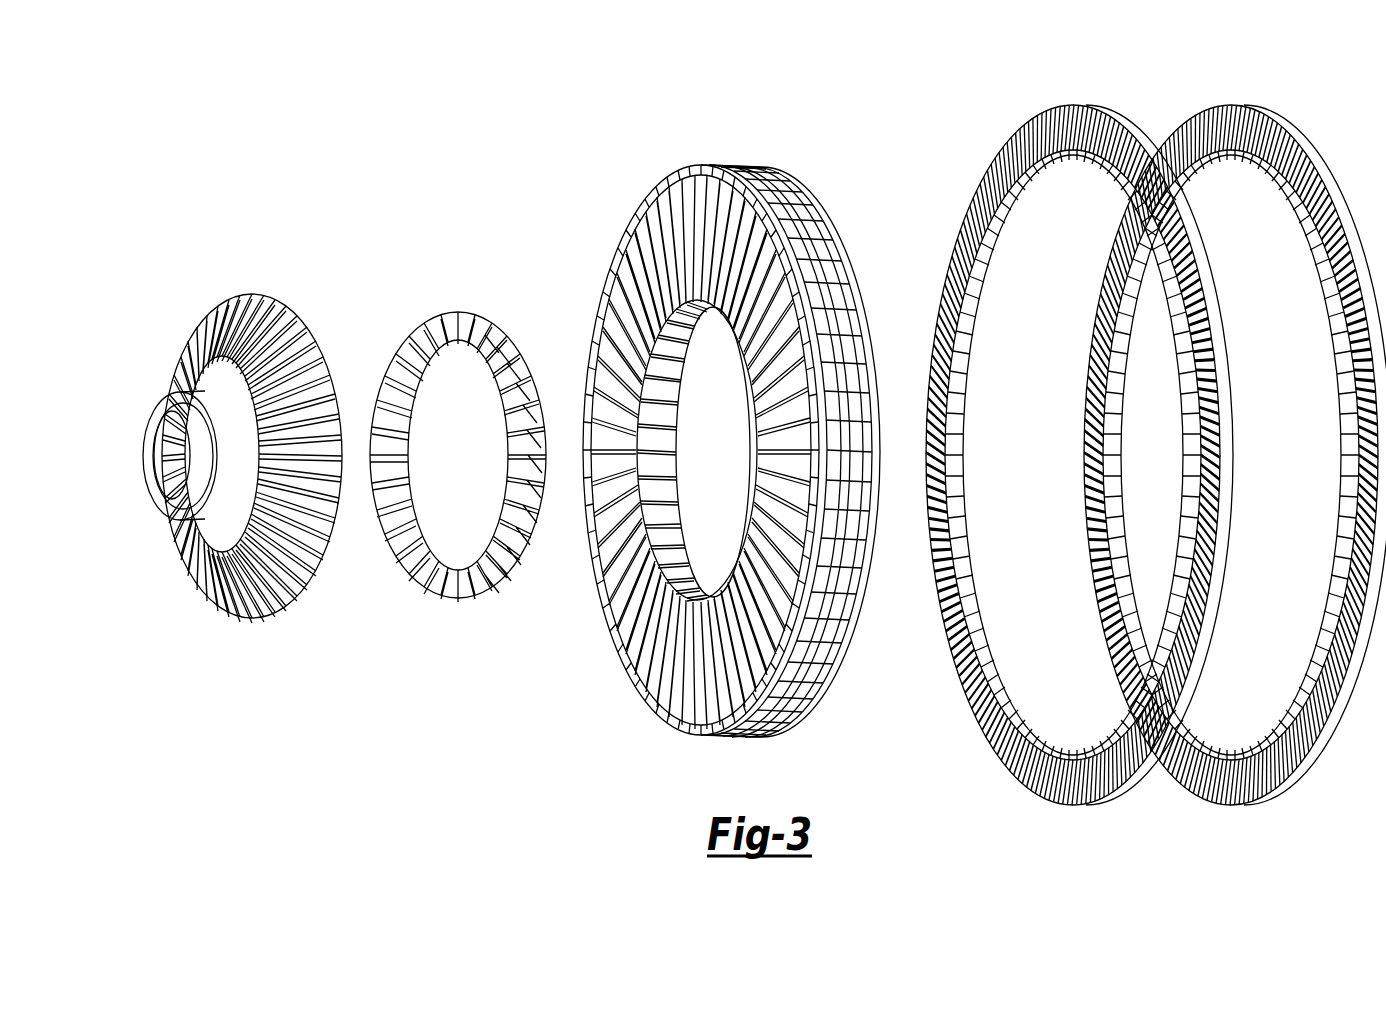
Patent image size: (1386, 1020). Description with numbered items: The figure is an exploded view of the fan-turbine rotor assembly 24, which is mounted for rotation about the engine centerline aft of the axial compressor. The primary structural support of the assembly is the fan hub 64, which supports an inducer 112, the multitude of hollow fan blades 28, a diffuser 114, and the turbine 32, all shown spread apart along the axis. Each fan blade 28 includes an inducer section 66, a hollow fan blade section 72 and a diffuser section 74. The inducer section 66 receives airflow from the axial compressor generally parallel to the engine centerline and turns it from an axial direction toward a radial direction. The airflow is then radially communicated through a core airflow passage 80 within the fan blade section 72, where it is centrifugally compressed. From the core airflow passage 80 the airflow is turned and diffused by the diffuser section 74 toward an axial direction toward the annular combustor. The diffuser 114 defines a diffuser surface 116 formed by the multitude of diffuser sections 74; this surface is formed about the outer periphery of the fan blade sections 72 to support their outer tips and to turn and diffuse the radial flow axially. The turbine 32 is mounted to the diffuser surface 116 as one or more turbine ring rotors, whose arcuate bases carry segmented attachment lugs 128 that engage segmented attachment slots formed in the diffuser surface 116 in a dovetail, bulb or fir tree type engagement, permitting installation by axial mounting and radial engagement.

The fan-turbine rotor assembly 24 is at (1362, 97).
The hollow fan blade 28 is at (622, 290).
The turbine 32 is at (992, 815).
The fan hub 64 is at (231, 270).
The inducer section 66 is at (532, 563).
The hollow fan blade section 72 is at (632, 610).
The diffuser section 74 is at (667, 712).
The core airflow passage 80 is at (677, 423).
The inducer 112 is at (435, 278).
The diffuser 114 is at (640, 165).
The diffuser surface 116 is at (780, 175).
The attachment lug 128 is at (537, 480).